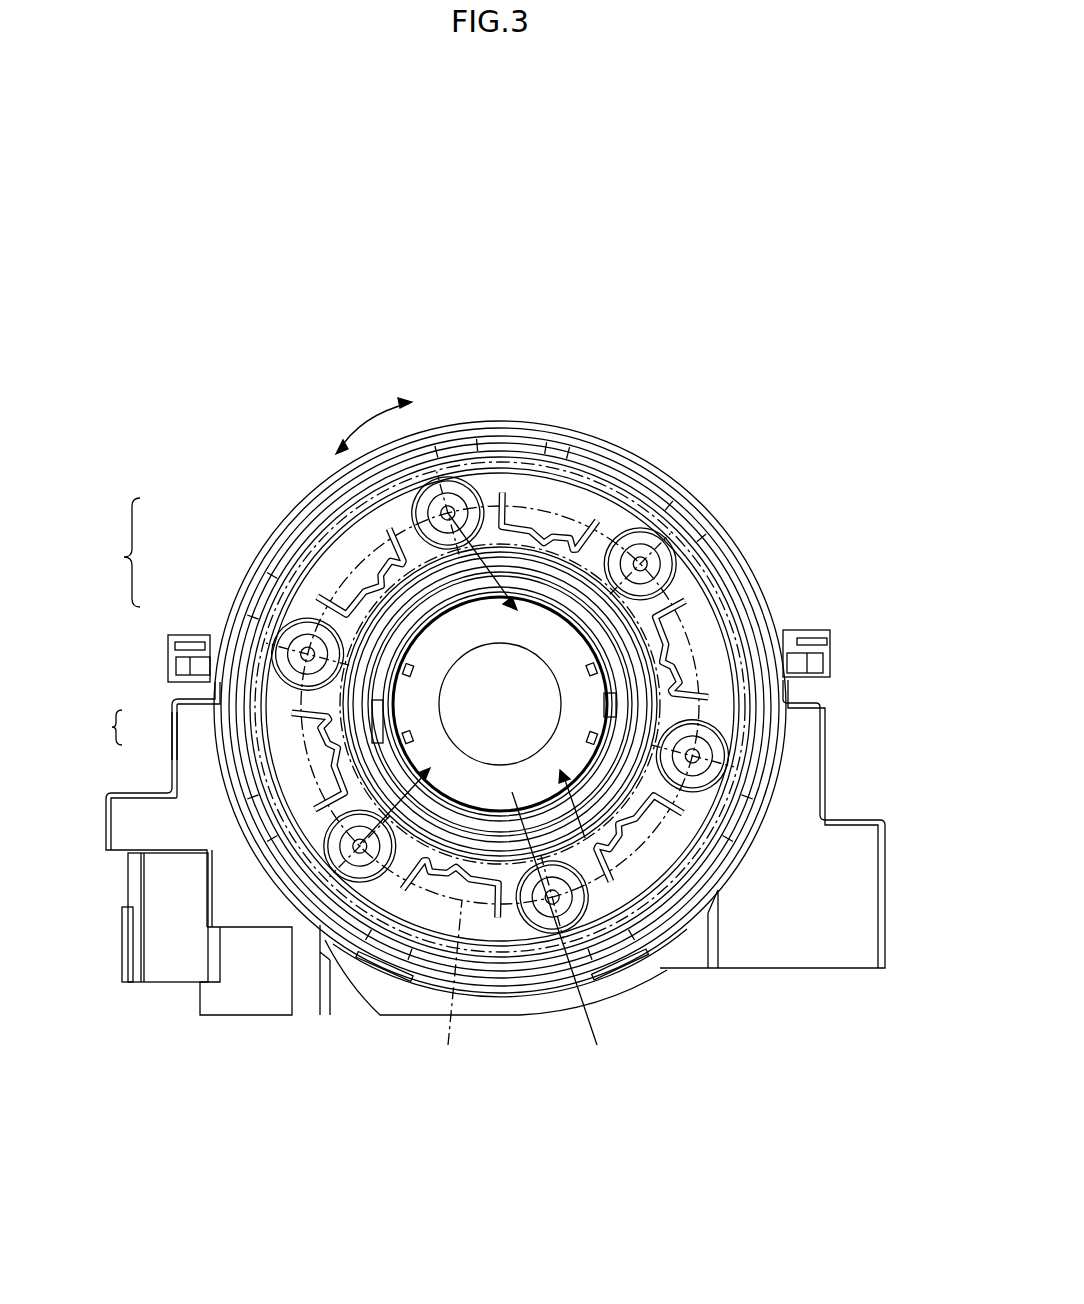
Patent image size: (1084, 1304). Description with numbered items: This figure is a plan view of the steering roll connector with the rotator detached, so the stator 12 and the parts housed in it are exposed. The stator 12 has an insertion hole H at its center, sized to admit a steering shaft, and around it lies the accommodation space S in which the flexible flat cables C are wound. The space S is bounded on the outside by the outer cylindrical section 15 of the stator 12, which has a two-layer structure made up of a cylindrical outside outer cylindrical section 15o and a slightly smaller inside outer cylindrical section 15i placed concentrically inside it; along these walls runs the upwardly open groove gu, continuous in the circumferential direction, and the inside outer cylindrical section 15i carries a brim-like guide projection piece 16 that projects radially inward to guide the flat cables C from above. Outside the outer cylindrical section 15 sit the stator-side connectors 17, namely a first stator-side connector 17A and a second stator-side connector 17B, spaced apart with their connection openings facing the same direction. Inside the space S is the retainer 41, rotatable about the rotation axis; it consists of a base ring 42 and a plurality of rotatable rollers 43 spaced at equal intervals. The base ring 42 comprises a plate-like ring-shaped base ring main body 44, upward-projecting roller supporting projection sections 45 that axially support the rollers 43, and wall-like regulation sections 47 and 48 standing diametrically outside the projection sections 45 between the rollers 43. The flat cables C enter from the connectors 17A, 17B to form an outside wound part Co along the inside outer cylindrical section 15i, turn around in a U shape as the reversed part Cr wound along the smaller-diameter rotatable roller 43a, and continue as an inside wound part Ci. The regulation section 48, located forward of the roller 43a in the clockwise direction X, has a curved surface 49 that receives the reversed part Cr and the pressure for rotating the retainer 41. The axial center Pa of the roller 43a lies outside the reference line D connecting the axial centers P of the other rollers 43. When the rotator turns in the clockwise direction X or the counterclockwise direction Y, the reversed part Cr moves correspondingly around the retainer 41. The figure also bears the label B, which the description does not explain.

The stator 12 is at (278, 517).
The outer cylindrical section 15 is at (153, 804).
The outside outer cylindrical section 15o is at (213, 712).
The inside outer cylindrical section 15i is at (232, 775).
The guide projection piece 16 is at (693, 553).
The stator-side connectors 17 is at (510, 963).
The first stator-side connector 17A is at (260, 1020).
The second stator-side connector 17B is at (773, 978).
The retainer 41 is at (610, 284).
The base ring 42 is at (430, 339).
The rotatable rollers 43 is at (605, 530).
The rotatable roller 43a is at (288, 660).
The base ring main body 44 is at (400, 500).
The roller supporting projection sections 45 is at (449, 512).
The regulation section 47 is at (537, 520).
The regulation section 48 is at (387, 573).
The curved surface 49 is at (365, 632).
The flexible flat cables C is at (124, 552).
The inside wound part Ci is at (288, 535).
The reversed part Cr is at (258, 610).
The outside wound part Co is at (248, 632).
The insertion hole H is at (492, 711).
The axial centers P is at (472, 678).
The axial center Pa is at (375, 680).
The accommodation space S is at (702, 674).
The bolt axis B is at (550, 918).
The reference line D is at (450, 986).
The groove gu is at (752, 770).
The clockwise direction X is at (375, 417).
The counterclockwise direction Y is at (308, 440).